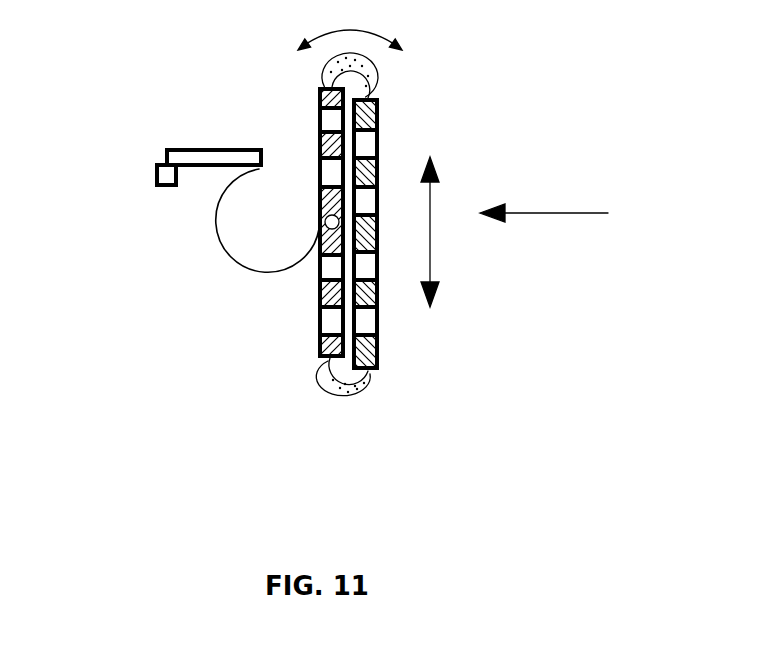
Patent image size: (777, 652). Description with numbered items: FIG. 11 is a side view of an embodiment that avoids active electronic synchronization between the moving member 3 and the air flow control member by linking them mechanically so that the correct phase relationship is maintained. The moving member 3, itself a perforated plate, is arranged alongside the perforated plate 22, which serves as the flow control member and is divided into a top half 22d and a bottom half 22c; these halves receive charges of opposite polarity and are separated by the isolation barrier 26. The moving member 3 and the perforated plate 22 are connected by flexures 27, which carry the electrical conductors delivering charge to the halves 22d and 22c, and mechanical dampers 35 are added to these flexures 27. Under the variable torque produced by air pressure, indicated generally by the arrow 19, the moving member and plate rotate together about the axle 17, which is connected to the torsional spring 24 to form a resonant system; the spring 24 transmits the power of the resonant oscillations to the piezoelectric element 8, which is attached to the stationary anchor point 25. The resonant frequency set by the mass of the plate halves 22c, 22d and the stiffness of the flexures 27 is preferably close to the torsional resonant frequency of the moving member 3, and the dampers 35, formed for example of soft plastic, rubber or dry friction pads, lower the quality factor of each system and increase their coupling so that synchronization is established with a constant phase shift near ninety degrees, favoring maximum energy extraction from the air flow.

The moving member 3 is at (318, 128).
The piezoelectric element 8 is at (165, 152).
The axle 17 is at (326, 226).
The direction of force 19 is at (544, 199).
The perforated plate 22 is at (380, 318).
The bottom half of the perforated plate 22c is at (379, 360).
The top half of the perforated plate 22d is at (380, 106).
The torsional spring 24 is at (218, 222).
The stationary anchor point 25 is at (155, 170).
The isolation barrier 26 is at (390, 217).
The flexures 27 is at (323, 72).
The mechanical dampers 35 is at (360, 64).